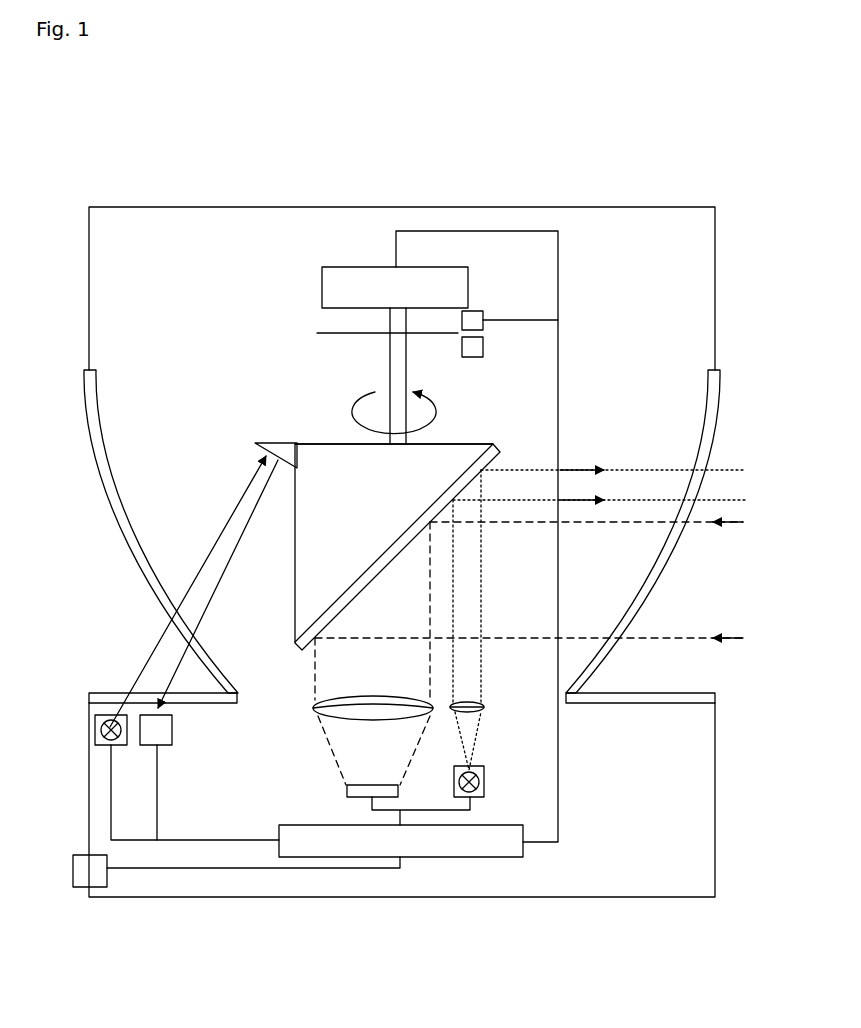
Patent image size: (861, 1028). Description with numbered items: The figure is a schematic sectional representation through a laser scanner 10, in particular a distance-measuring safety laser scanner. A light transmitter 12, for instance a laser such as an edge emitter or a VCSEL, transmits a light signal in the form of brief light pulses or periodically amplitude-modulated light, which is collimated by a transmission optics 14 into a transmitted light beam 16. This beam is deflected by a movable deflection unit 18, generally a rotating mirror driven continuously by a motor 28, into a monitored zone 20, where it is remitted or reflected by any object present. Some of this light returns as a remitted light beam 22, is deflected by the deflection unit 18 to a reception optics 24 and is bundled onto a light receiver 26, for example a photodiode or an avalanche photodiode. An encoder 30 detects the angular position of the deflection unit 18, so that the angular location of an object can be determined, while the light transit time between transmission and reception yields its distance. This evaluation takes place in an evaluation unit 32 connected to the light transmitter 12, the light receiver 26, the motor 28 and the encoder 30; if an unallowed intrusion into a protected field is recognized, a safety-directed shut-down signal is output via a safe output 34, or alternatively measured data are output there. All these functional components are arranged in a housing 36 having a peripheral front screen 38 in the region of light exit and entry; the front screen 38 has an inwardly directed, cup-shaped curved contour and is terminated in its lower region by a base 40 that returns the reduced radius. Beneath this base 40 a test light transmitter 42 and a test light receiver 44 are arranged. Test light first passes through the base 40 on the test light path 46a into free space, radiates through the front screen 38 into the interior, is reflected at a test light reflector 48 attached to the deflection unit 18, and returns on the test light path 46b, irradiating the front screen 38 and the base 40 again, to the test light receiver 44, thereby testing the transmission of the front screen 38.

The laser scanner 10 is at (494, 136).
The light transmitter 12 is at (486, 784).
The transmission optics 14 is at (486, 710).
The transmitted light beam 16 is at (632, 486).
The deflection unit 18 is at (458, 462).
The monitored zone 20 is at (798, 258).
The remitted light beam 22 is at (722, 526).
The reception optics 24 is at (316, 710).
The light receiver 26 is at (346, 792).
The motor 28 is at (328, 308).
The encoder 30 is at (484, 345).
The evaluation unit 32 is at (487, 856).
The safe output 34 is at (73, 870).
The housing 36 is at (663, 897).
The front screen 38 is at (127, 538).
The base 40 is at (98, 694).
The test light transmitter 42 is at (100, 729).
The test light receiver 44 is at (170, 735).
The test light path 46a is at (206, 548).
The test light path 46b is at (226, 566).
The test light reflector 48 is at (264, 442).